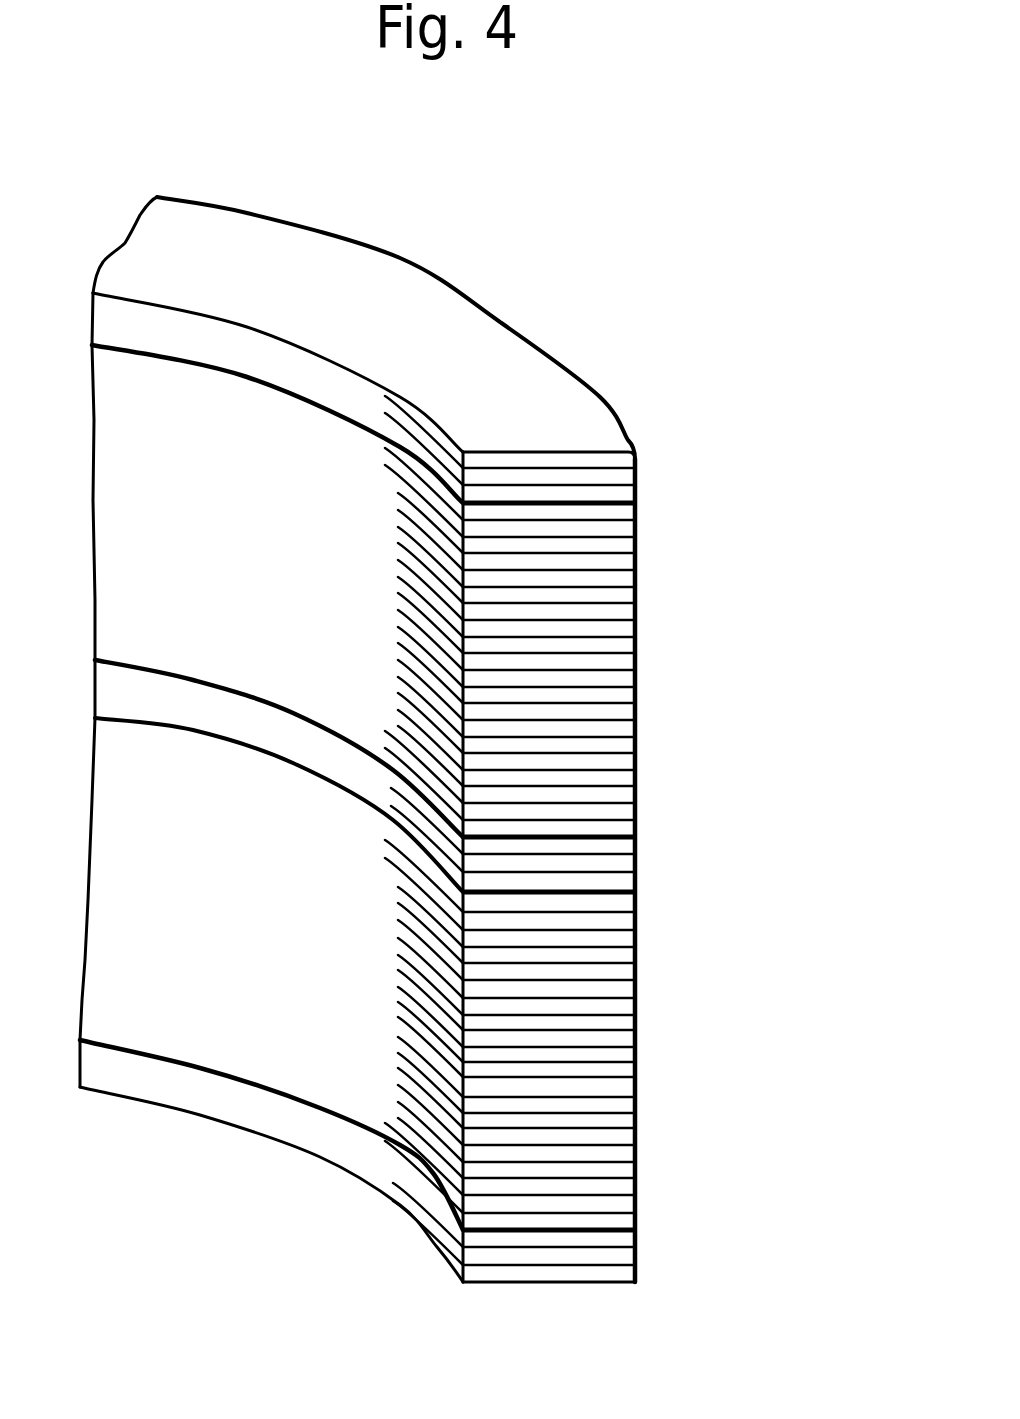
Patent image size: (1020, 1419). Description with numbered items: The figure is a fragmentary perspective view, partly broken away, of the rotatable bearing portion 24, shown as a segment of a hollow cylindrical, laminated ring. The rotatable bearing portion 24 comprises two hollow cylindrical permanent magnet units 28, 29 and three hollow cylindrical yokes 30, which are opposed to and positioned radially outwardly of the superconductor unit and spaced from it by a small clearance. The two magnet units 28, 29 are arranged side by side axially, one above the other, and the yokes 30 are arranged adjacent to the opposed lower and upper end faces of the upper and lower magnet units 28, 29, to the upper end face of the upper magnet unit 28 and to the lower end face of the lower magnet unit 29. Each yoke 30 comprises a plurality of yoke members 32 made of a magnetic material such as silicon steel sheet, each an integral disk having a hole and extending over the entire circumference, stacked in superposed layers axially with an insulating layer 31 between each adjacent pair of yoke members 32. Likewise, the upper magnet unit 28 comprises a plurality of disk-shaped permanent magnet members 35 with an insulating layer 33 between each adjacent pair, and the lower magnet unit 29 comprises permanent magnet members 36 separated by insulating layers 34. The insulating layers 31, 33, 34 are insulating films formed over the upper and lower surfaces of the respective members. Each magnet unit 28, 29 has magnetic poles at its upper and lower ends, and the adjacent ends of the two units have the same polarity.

The rotatable bearing portion 24 is at (557, 338).
The upper permanent magnet unit 28 is at (637, 727).
The lower permanent magnet unit 29 is at (637, 1092).
The yoke 30 is at (637, 457).
The insulating layer 31 is at (577, 467).
The yoke member 32 is at (637, 498).
The insulating layer 33 is at (487, 586).
The insulating layer 34 is at (490, 946).
The permanent magnet member 35 is at (637, 520).
The permanent magnet member 36 is at (640, 912).